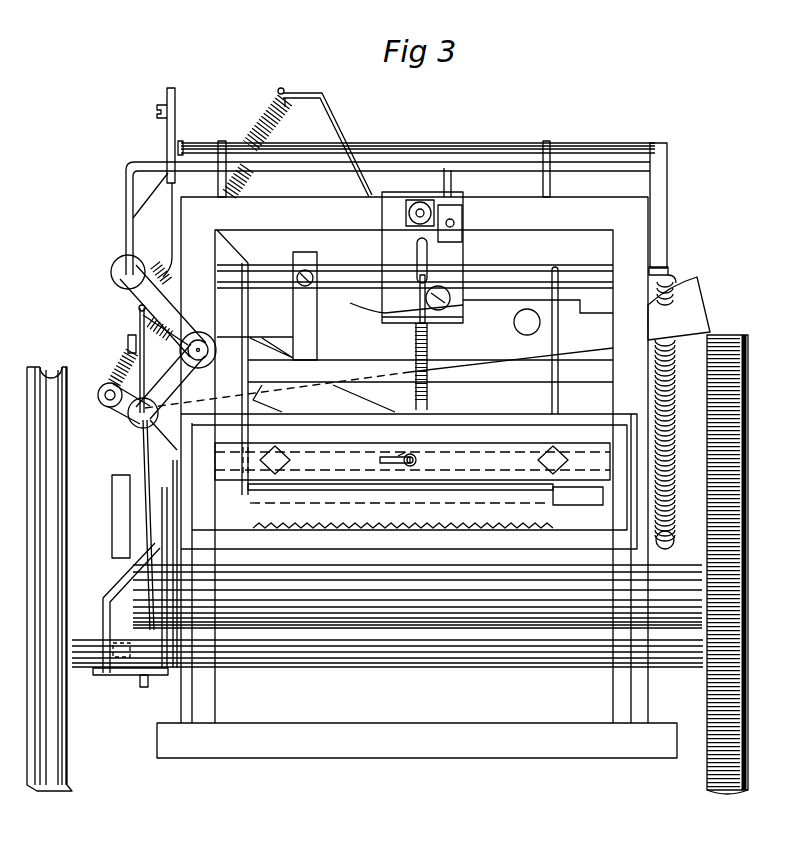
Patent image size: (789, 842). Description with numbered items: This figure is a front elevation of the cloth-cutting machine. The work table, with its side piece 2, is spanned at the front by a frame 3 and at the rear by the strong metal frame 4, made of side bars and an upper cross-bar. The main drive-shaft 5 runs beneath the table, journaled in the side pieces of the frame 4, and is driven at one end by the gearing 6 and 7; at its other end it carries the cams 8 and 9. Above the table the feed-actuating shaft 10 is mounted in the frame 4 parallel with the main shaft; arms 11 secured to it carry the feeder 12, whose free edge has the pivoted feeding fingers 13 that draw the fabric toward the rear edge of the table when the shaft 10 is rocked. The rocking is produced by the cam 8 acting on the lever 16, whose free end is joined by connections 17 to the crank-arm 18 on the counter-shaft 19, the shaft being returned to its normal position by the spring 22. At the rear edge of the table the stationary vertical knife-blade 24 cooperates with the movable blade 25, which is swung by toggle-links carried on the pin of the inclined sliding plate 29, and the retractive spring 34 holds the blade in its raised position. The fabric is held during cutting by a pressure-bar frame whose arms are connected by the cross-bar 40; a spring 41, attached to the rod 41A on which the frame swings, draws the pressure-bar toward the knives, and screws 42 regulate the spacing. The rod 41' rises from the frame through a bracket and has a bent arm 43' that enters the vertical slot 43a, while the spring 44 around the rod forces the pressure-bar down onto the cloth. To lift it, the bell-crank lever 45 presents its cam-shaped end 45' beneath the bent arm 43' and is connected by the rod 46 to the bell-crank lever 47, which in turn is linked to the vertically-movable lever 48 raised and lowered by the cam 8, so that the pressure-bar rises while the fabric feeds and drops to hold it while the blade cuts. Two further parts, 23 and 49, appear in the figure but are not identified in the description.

The side piece 2 is at (166, 467).
The frame 3 is at (519, 436).
The metal frame 4 is at (668, 308).
The main drive-shaft 5 is at (417, 596).
The gearing 6 is at (745, 705).
The gearing 7 is at (734, 562).
The cam 8 is at (161, 486).
The cam 9 is at (121, 516).
The feed-actuating shaft 10 is at (345, 276).
The arms 11 is at (558, 378).
The feeder 12 is at (400, 504).
The feeding fingers 13 is at (412, 526).
The lever 16 is at (145, 677).
The connections 17 is at (120, 388).
The crank-arm 18 is at (173, 125).
The counter-shaft 19 is at (583, 150).
The spring 22 is at (676, 444).
The post 23 is at (667, 212).
The stationary knife-blade 24 is at (578, 496).
The movable blade 25 is at (324, 398).
The inclined sliding plate 29 is at (379, 354).
The retractive spring 34 is at (265, 115).
The cross-bar 40 is at (412, 461).
The spring 41 is at (417, 463).
The rod 41A is at (392, 459).
The rod 41' is at (398, 303).
The screws 42 is at (292, 462).
The vertical slot 43a is at (420, 250).
The bent end 43' is at (459, 260).
The spring 44 is at (428, 345).
The bell-crank lever 45 is at (441, 284).
The cam-shaped end 45' is at (404, 295).
The rod 46 is at (313, 172).
The bell-crank lever 47 is at (160, 308).
The vertically-movable lever 48 is at (158, 530).
The collar 49 is at (552, 186).